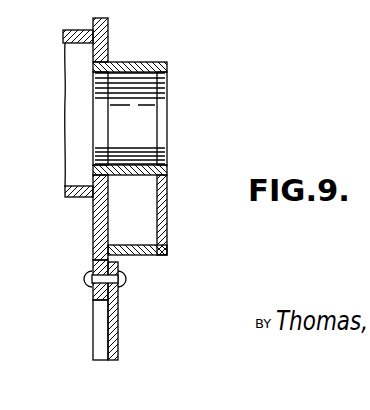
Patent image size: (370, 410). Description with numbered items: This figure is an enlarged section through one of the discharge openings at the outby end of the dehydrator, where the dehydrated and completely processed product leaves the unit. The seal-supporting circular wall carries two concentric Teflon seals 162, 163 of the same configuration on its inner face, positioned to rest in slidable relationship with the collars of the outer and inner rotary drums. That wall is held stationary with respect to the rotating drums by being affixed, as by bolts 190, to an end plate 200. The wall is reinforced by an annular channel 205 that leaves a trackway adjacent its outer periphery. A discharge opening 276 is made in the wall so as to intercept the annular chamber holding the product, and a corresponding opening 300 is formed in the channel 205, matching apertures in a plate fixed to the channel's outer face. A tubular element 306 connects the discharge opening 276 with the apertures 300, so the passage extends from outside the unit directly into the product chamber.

The seal 162 is at (103, 30).
The seal 163 is at (88, 197).
The discharge opening 276 is at (93, 89).
The channel 205 is at (136, 63).
The tubular element 306 is at (137, 163).
The opening 300 is at (161, 169).
The bolts 190 is at (125, 280).
The end plate 200 is at (118, 322).